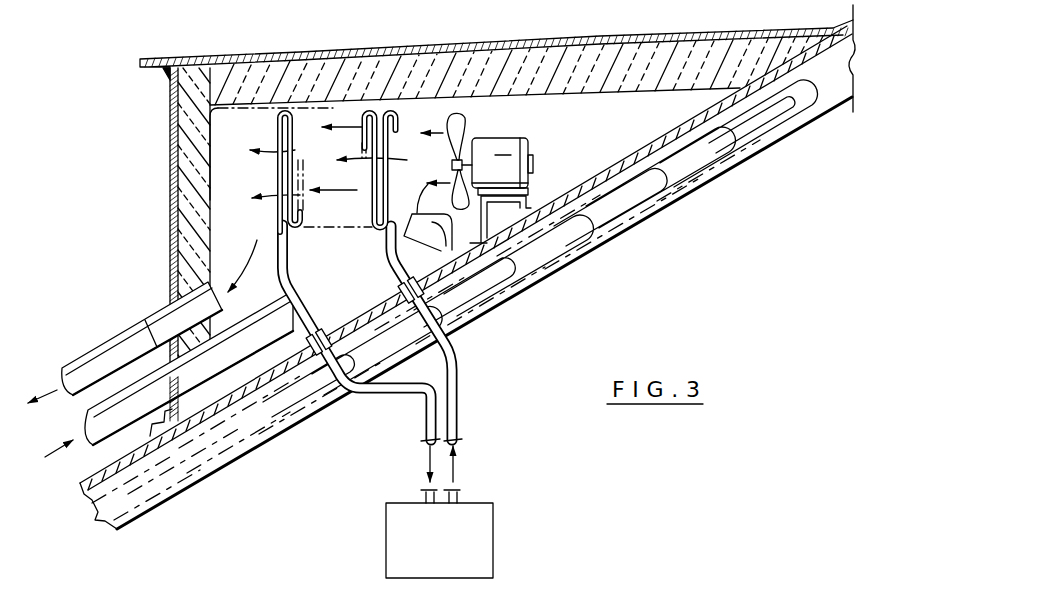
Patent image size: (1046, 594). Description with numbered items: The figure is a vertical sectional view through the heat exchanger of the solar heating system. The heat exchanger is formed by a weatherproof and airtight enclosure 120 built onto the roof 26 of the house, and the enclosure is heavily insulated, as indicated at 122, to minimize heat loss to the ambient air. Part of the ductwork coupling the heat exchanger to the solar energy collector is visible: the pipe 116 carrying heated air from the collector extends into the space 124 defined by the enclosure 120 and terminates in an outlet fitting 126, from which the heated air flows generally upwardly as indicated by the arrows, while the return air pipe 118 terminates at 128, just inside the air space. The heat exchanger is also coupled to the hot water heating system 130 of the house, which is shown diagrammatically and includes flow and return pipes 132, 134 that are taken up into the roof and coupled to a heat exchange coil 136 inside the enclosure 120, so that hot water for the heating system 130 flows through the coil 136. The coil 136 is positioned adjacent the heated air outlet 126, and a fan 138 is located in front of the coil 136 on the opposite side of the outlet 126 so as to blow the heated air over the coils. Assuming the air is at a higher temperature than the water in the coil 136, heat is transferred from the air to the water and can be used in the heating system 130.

The roof 26 is at (708, 106).
The pipe carrying heated air 116 is at (88, 410).
The return pipe 118 is at (86, 352).
The enclosure 120 is at (416, 46).
The insulation 122 is at (235, 77).
The space 124 is at (595, 150).
The outlet fitting 126 is at (430, 240).
The return pipe termination 128 is at (180, 303).
The hot water heating system 130 is at (497, 506).
The flow pipe 132 is at (458, 393).
The return pipe 134 is at (426, 422).
The heat exchange coil 136 is at (334, 104).
The fan 138 is at (527, 122).